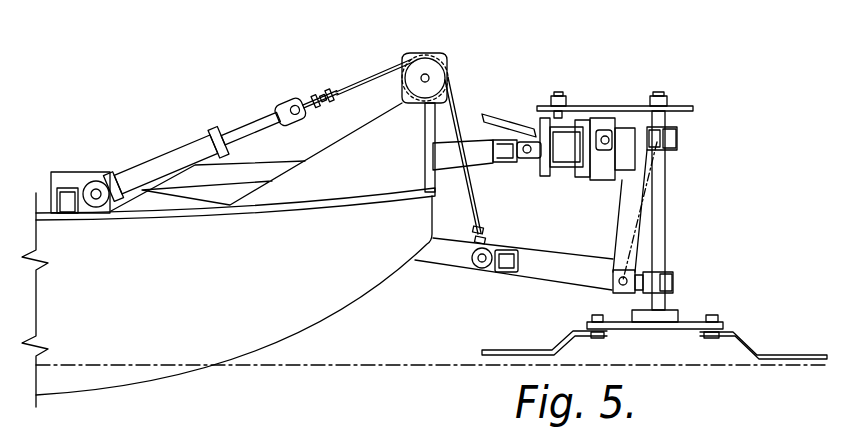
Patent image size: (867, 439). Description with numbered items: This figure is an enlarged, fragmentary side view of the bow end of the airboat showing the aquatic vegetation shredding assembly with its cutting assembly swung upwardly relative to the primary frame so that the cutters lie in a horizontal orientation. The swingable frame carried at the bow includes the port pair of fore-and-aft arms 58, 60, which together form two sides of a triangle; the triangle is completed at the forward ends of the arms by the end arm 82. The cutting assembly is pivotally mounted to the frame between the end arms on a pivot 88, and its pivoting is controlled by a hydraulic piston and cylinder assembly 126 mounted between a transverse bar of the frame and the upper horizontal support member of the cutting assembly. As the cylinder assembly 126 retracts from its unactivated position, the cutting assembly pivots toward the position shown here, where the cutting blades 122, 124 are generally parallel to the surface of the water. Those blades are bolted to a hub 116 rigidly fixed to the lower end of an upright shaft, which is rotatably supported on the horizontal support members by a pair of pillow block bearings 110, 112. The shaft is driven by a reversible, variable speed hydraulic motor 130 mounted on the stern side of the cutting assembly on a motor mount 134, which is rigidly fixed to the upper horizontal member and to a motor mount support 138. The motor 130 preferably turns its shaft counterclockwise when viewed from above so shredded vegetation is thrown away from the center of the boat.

The fore-and-aft arm 58 is at (447, 250).
The fore-and-aft arm 60 is at (473, 150).
The end arm 82 is at (618, 188).
The pivot 88 is at (655, 263).
The pillow block bearing 110 is at (668, 283).
The pillow block bearing 112 is at (667, 137).
The hub 116 is at (657, 313).
The cutting blade 122 is at (542, 350).
The cutting blade 124 is at (760, 353).
The hydraulic piston and cylinder assembly 126 is at (552, 146).
The hydraulic motor 130 is at (536, 122).
The motor mount 134 is at (607, 168).
The motor mount support 138 is at (623, 160).